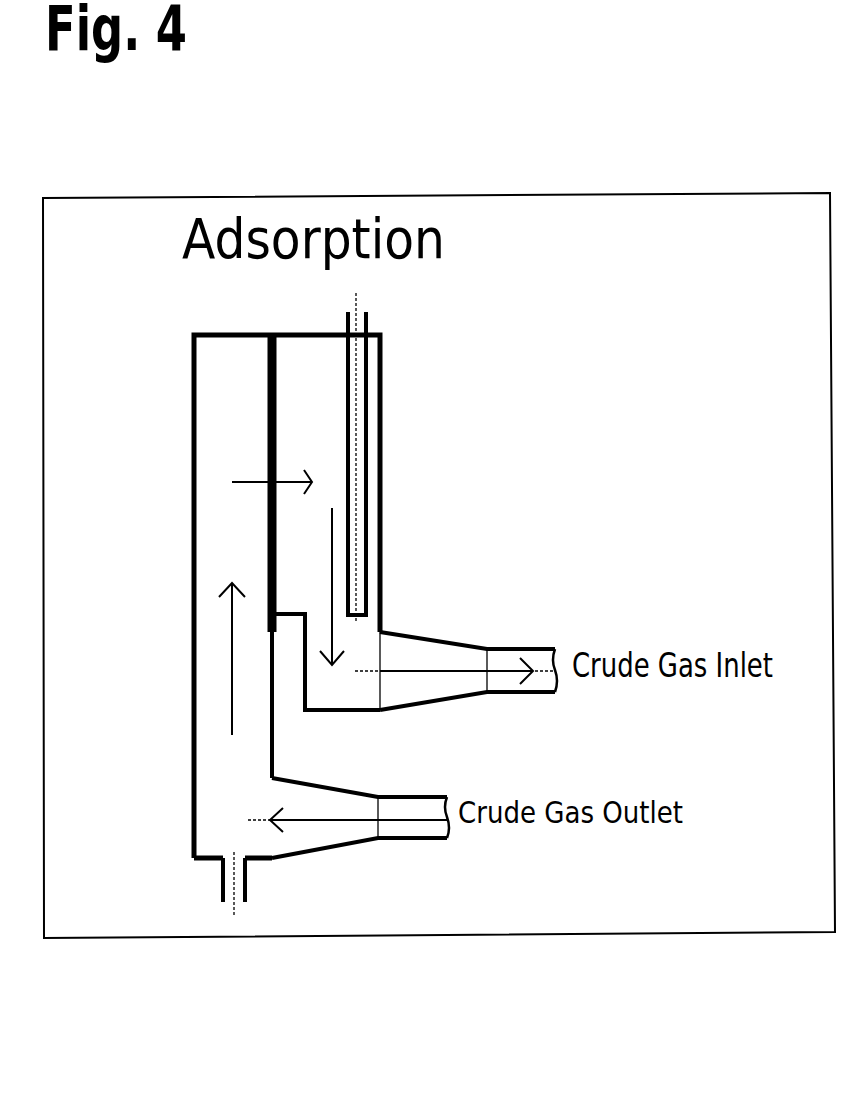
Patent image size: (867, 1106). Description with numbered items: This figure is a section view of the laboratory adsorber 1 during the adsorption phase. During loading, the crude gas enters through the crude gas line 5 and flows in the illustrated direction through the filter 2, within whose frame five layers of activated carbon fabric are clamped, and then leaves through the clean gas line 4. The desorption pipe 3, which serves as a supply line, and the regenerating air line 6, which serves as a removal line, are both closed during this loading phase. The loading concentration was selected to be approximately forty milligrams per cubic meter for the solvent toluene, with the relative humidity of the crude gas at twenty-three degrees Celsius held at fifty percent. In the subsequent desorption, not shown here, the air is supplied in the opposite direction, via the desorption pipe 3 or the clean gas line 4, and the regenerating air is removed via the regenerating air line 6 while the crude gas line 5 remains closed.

The laboratory adsorber 1 is at (192, 387).
The filter 2 is at (268, 528).
The desorption pipe 3 is at (352, 390).
The clean gas line 4 is at (499, 648).
The crude gas line 5 is at (387, 840).
The regenerating air line 6 is at (220, 880).